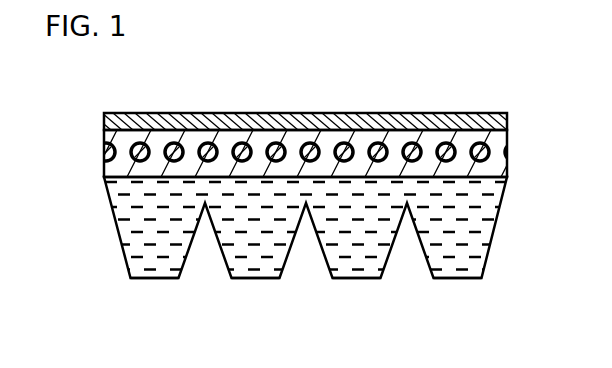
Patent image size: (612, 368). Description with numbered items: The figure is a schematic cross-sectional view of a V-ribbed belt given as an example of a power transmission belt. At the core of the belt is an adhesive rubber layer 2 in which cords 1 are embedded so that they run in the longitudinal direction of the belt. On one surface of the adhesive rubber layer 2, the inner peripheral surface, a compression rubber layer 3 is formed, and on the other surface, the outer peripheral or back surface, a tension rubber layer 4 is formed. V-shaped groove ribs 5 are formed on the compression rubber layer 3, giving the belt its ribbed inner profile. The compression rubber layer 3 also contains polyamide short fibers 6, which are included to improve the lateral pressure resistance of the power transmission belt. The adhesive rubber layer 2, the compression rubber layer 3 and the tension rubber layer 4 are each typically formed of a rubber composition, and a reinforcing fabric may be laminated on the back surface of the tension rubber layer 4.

The cords 1 is at (307, 118).
The adhesive rubber layer 2 is at (309, 126).
The compression rubber layer 3 is at (325, 227).
The tension rubber layer 4 is at (304, 103).
The V-shaped groove ribs 5 is at (306, 300).
The polyamide short fibers 6 is at (306, 264).